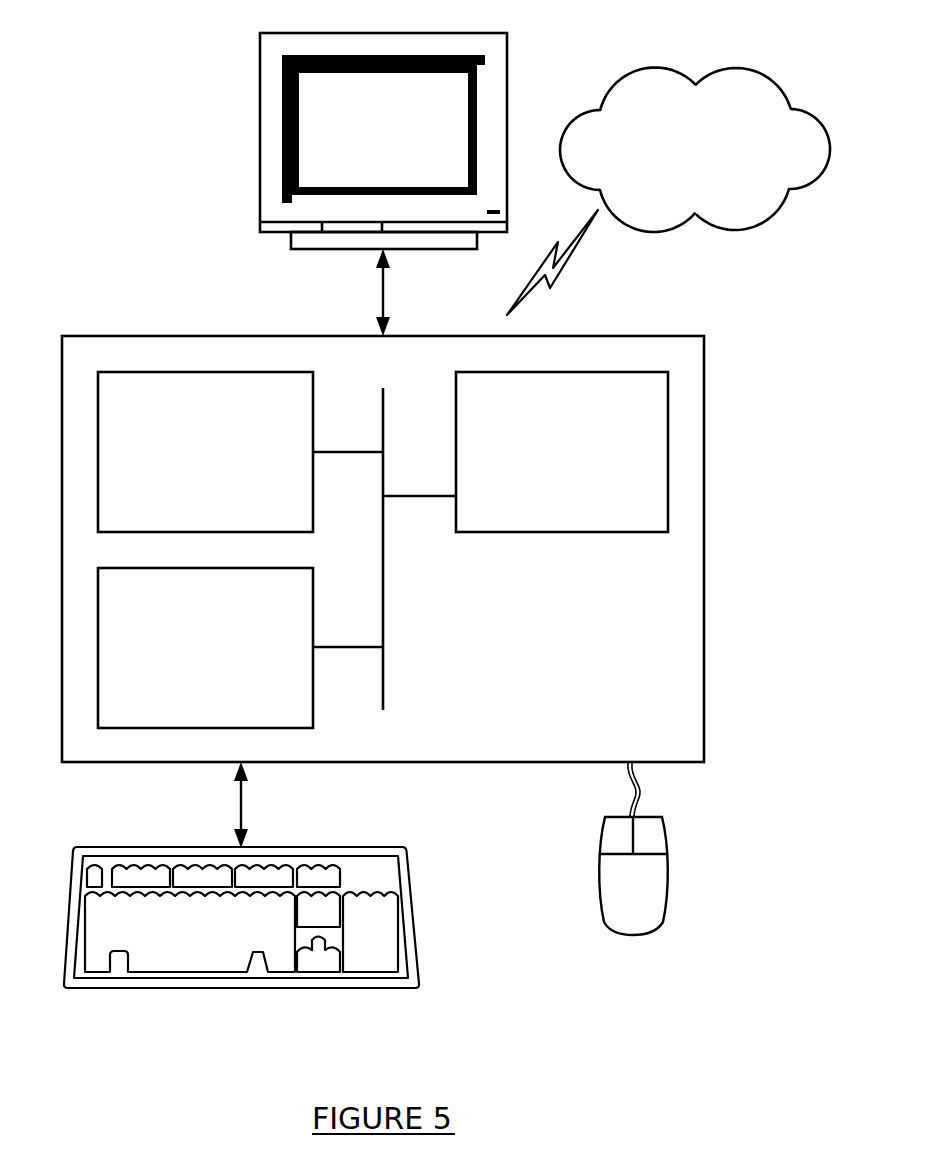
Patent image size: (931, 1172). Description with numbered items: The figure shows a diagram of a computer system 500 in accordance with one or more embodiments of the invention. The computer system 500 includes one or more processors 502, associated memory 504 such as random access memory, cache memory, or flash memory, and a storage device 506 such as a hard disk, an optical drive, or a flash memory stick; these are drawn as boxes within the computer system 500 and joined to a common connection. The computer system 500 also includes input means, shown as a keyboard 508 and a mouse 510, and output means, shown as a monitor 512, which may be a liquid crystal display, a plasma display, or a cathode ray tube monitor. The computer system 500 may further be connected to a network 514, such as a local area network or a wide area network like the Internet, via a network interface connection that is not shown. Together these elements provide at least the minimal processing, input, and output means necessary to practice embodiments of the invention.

The computer system 500 is at (732, 398).
The processor 502 is at (540, 462).
The memory 504 is at (183, 462).
The storage device 506 is at (183, 662).
The keyboard 508 is at (165, 946).
The mouse 510 is at (611, 899).
The monitor 512 is at (362, 142).
The network 514 is at (673, 161).